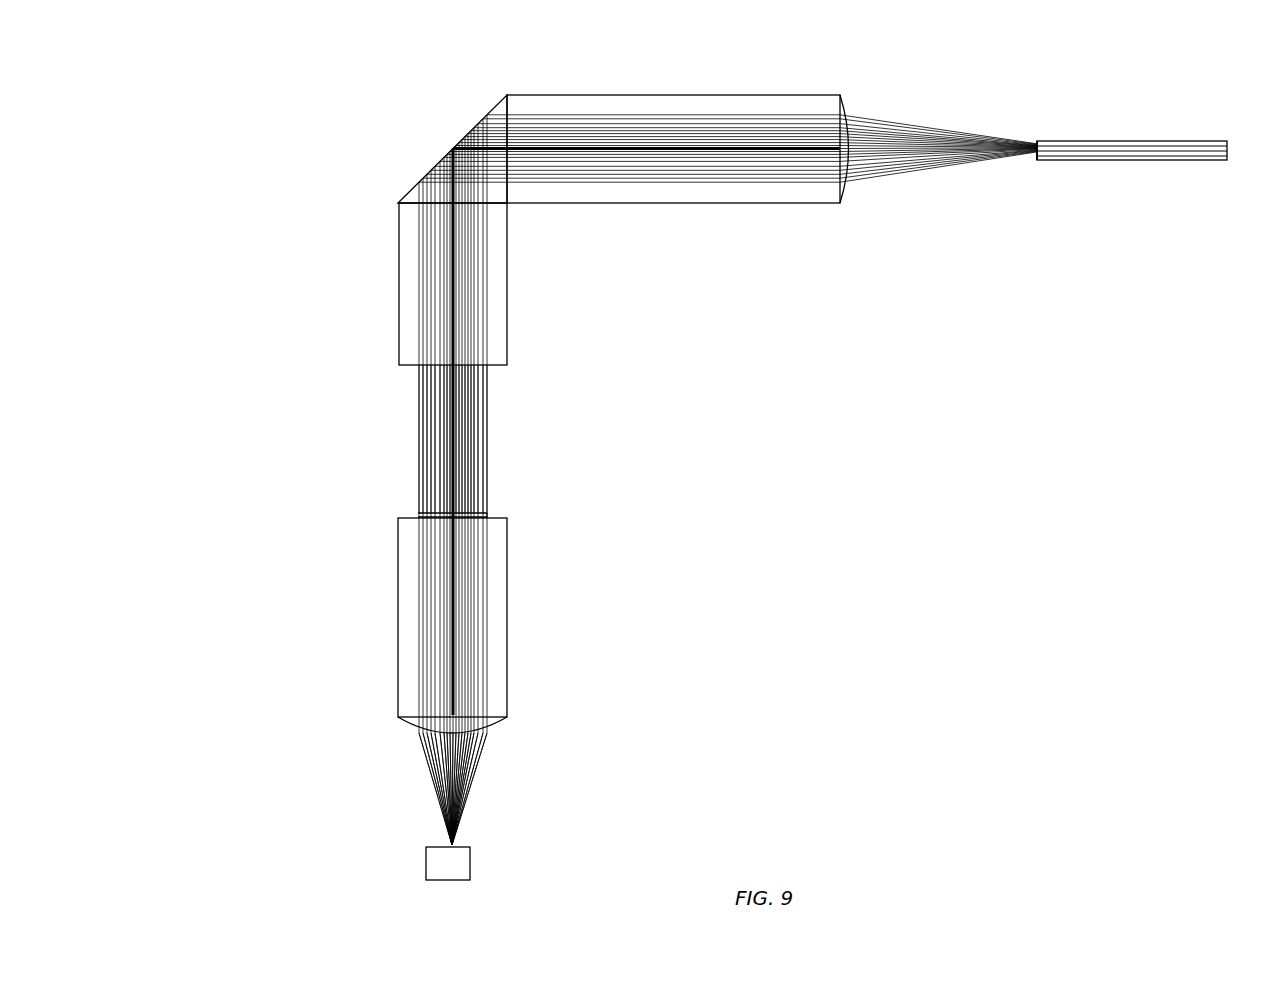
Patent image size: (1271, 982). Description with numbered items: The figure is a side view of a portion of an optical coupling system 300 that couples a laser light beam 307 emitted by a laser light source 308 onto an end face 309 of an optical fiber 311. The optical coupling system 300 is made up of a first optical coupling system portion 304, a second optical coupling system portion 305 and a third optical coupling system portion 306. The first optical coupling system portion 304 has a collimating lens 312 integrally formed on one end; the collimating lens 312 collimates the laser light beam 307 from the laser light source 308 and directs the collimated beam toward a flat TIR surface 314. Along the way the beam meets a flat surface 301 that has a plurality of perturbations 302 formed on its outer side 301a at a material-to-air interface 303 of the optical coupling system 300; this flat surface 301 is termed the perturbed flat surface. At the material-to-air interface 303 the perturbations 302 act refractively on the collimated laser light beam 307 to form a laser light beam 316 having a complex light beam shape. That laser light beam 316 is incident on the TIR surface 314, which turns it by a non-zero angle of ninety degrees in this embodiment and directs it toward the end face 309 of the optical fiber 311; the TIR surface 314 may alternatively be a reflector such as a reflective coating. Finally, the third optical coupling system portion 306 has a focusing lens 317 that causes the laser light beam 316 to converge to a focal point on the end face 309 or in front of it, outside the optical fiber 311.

The optical coupling system 300 is at (314, 151).
The flat surface 301 is at (410, 516).
The outer side 301a is at (492, 517).
The perturbations 302 is at (418, 512).
The material-to-air interface 303 is at (414, 490).
The first optical coupling system portion 304 is at (507, 620).
The second optical coupling system portion 305 is at (507, 290).
The third optical coupling system portion 306 is at (580, 95).
The laser light beam 307 is at (423, 600).
The laser light source 308 is at (438, 846).
The end face 309 is at (1033, 165).
The optical fiber 311 is at (1133, 140).
The collimating lens 312 is at (492, 727).
The flat TIR surface 314 is at (492, 108).
The laser light beam having a complex light beam shape 316 is at (742, 172).
The focusing lens 317 is at (851, 110).